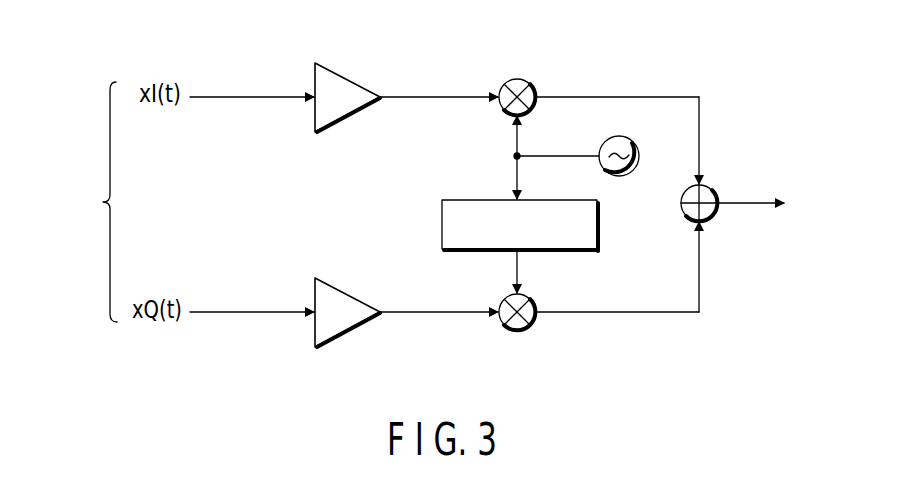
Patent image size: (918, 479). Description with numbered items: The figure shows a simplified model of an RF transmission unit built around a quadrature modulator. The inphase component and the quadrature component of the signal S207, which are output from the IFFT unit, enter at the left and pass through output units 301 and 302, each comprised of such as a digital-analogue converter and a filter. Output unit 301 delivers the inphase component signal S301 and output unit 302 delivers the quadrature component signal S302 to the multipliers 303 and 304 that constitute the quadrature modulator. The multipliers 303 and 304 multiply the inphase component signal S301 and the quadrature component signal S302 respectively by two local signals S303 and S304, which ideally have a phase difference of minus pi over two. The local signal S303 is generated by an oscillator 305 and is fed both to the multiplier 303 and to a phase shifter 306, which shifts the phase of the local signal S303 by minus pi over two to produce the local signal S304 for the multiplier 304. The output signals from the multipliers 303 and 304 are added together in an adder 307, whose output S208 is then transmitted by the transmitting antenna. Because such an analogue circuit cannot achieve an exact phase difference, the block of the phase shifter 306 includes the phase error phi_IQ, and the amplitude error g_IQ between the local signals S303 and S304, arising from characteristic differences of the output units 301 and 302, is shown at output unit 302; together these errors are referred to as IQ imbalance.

The output unit 301 is at (350, 76).
The output unit 302 is at (346, 336).
The multiplier 303 is at (517, 78).
The multiplier 304 is at (517, 331).
The oscillator 305 is at (631, 178).
The phase shifter 306 is at (440, 224).
The adder 307 is at (712, 216).
The signal S207 is at (80, 202).
The output modulated signal S208 is at (777, 202).
The inphase component signal S301 is at (431, 94).
The quadrature component signal S302 is at (432, 316).
The local signal S303 is at (515, 144).
The local signal S304 is at (515, 270).